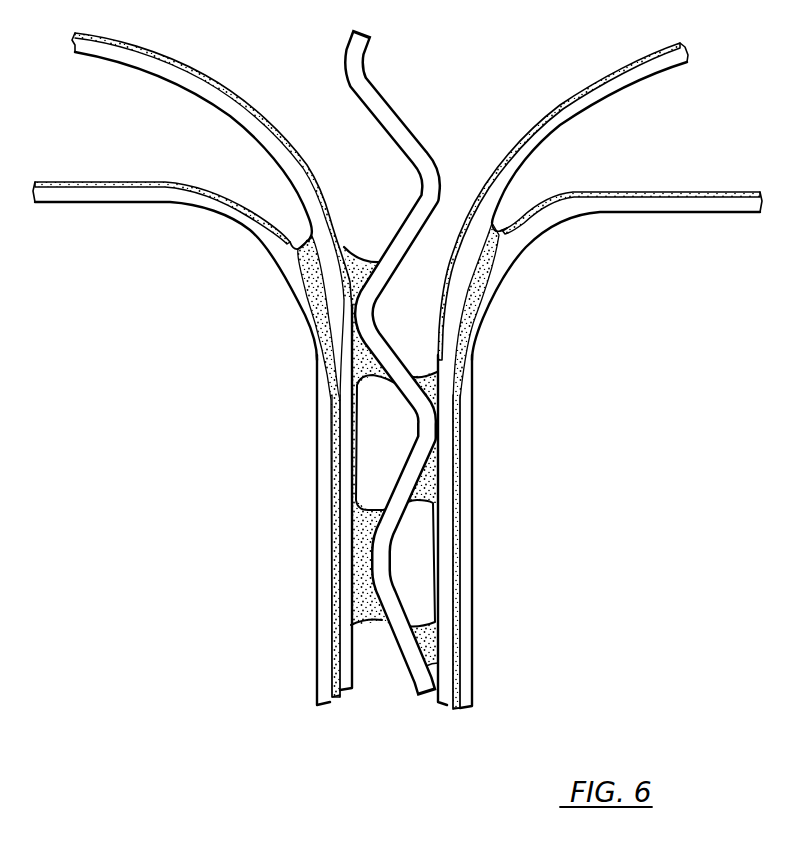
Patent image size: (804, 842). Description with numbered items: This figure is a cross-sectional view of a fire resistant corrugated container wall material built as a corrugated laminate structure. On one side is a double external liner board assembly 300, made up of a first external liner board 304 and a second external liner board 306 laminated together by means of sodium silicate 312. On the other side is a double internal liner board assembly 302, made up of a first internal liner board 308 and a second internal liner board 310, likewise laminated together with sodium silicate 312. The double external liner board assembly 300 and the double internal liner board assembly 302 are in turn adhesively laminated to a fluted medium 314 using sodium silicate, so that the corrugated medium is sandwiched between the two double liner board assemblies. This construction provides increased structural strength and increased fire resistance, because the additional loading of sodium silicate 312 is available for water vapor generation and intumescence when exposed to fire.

The double external liner board assembly 300 is at (357, 745).
The double internal liner board assembly 302 is at (483, 745).
The first external liner board 304 is at (322, 625).
The second external liner board 306 is at (343, 559).
The first internal liner board 308 is at (470, 552).
The second internal liner board 310 is at (448, 622).
The sodium silicate 312 is at (293, 232).
The fluted medium 314 is at (437, 442).